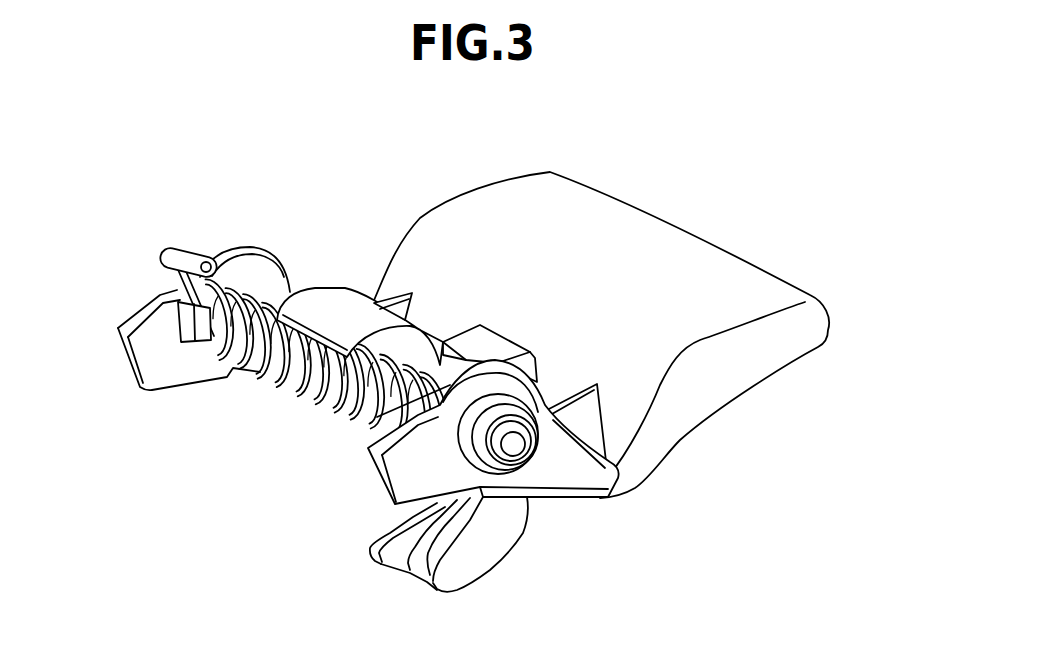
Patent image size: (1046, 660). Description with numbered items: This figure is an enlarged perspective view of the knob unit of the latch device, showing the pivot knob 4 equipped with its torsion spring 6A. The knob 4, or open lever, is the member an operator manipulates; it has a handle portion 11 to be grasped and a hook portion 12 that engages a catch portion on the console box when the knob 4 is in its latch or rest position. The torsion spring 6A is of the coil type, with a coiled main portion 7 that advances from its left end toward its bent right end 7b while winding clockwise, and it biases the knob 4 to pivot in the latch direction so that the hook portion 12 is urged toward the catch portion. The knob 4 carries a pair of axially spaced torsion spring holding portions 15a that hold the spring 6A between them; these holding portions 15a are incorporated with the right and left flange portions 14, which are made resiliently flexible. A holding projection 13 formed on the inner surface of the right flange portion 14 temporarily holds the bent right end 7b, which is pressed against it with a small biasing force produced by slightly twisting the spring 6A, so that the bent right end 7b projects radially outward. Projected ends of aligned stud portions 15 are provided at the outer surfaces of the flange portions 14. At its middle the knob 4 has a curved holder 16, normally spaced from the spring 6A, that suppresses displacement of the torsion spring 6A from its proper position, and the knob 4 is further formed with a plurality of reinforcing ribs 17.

The pivot knob 4 is at (690, 195).
The handle portion 11 is at (720, 278).
The torsion spring 6A is at (286, 399).
The coiled main portion 7 is at (315, 397).
The bent right end 7b is at (178, 255).
The torsion spring holding portion 15a is at (238, 302).
The holding projection 13 is at (185, 327).
The flange portion 14 is at (172, 367).
The stud portion 15 is at (523, 456).
The curved holder 16 is at (340, 307).
The reinforcing rib 17 is at (485, 345).
The hook portion 12 is at (462, 572).